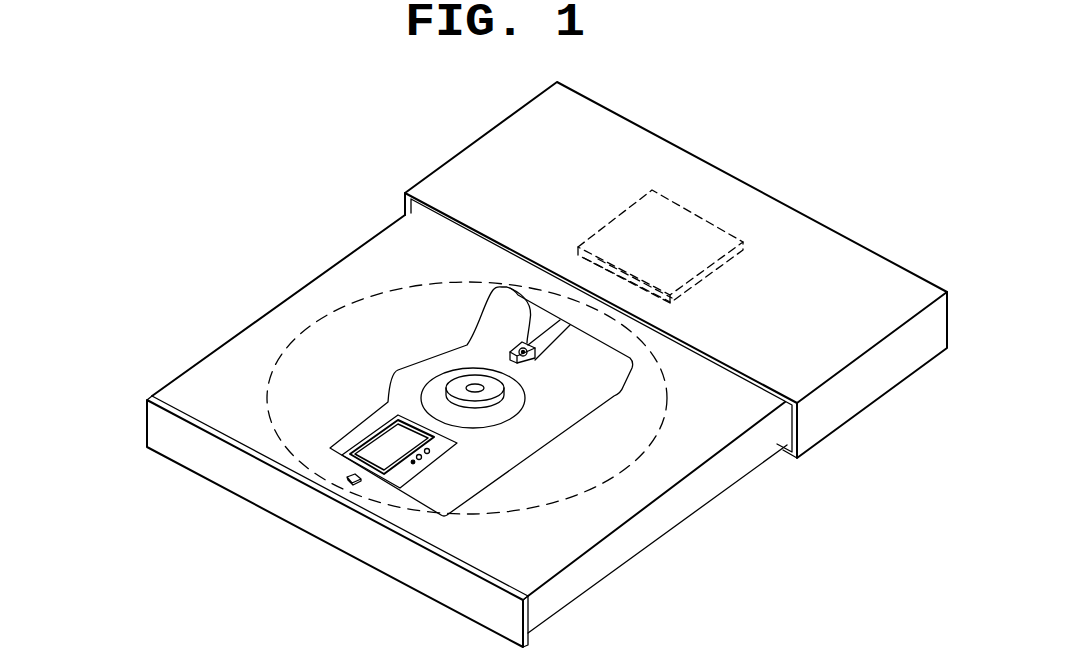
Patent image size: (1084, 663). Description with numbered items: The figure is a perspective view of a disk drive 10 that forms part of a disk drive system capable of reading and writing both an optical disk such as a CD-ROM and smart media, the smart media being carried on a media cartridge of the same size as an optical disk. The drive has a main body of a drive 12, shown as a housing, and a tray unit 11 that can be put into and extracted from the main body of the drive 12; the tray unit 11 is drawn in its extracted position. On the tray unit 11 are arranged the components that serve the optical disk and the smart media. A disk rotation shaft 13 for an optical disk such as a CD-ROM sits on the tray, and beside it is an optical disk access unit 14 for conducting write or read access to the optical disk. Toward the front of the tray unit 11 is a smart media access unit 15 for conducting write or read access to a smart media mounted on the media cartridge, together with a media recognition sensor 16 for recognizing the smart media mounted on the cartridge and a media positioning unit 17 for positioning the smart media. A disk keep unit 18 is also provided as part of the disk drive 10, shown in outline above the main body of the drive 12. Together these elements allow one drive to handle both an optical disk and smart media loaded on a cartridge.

The disk drive 10 is at (707, 524).
The tray unit 11 is at (198, 388).
The main body of a drive 12 is at (505, 133).
The disk rotation shaft 13 is at (457, 387).
The optical disk access unit 14 is at (522, 343).
The smart media access unit 15 is at (373, 453).
The media recognition sensor 16 is at (413, 463).
The media positioning unit 17 is at (348, 478).
The disk keep unit 18 is at (690, 240).